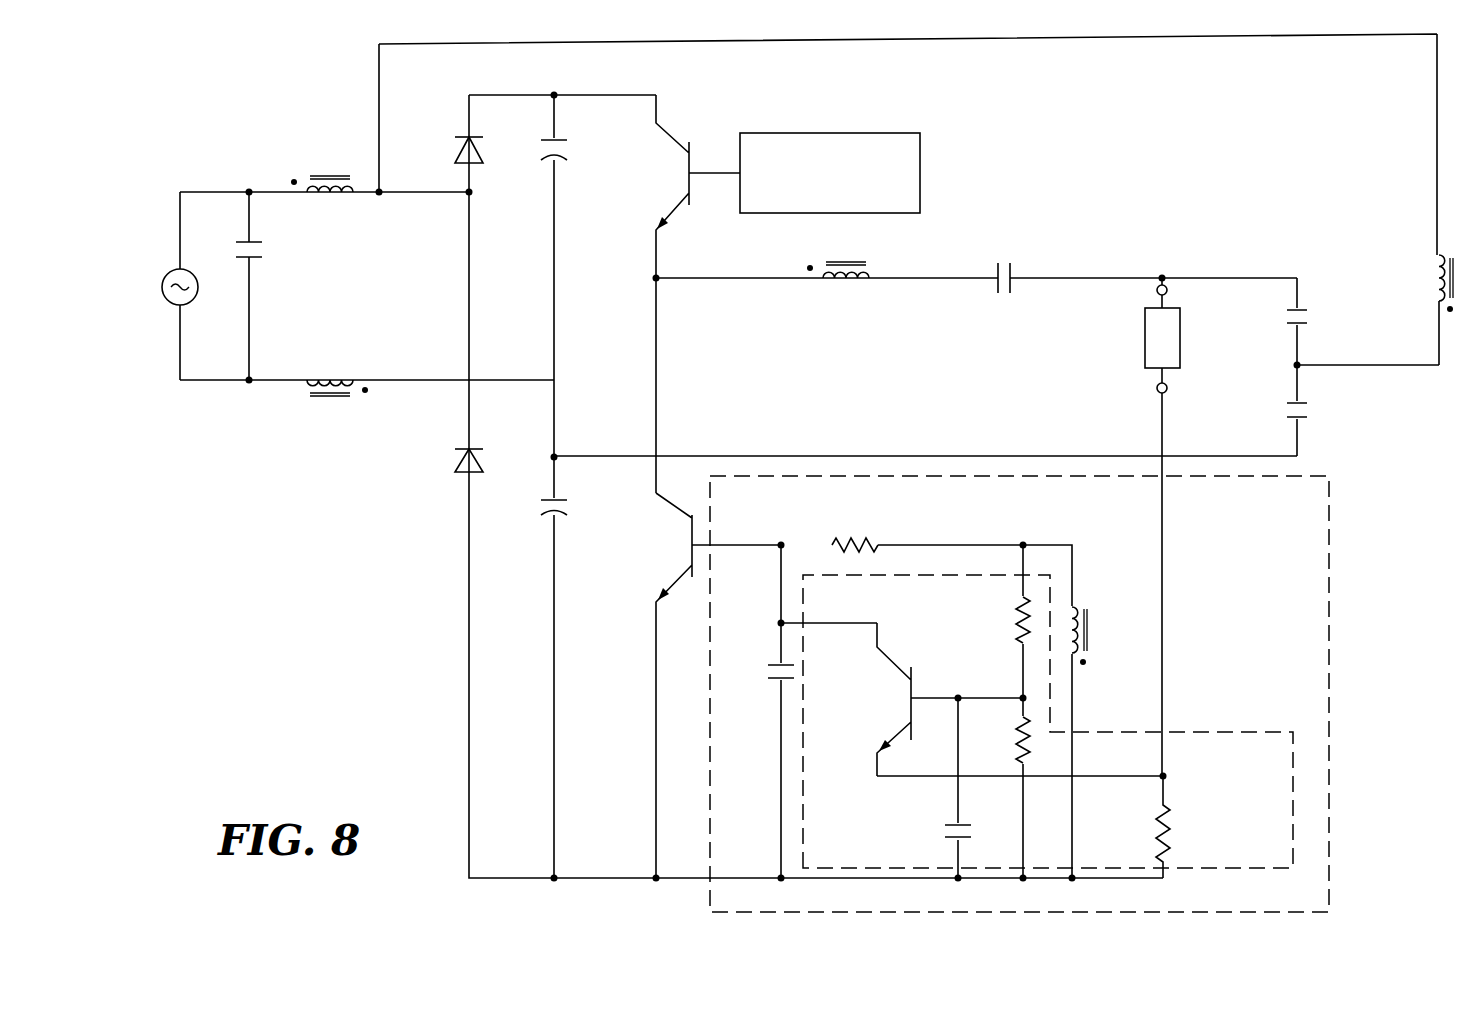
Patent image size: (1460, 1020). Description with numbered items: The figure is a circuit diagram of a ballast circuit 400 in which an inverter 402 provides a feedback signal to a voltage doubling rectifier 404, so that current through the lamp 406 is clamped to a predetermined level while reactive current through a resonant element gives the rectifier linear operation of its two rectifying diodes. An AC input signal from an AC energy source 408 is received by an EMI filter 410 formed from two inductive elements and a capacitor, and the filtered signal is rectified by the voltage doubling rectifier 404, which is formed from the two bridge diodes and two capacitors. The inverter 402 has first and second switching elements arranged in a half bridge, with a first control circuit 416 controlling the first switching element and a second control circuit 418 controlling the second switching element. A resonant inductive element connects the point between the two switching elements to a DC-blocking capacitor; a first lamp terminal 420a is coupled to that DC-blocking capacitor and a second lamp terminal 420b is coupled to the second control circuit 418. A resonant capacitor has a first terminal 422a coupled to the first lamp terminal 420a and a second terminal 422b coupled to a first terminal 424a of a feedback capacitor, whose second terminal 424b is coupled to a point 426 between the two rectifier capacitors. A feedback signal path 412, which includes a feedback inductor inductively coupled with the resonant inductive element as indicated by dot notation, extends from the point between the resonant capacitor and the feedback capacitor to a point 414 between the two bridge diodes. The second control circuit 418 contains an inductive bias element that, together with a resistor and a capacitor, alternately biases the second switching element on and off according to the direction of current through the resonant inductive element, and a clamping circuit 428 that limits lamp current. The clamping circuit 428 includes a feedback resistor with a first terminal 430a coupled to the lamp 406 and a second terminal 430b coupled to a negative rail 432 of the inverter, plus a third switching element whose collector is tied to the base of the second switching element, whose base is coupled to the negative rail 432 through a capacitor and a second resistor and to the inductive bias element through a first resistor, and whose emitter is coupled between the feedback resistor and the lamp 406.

The ballast circuit 400 is at (250, 128).
The inverter 402 is at (1072, 94).
The voltage doubling rectifier 404 is at (528, 131).
The lamp 406 is at (1143, 350).
The AC energy source 408 is at (185, 305).
The EMI filter 410 is at (345, 268).
The feedback signal path 412 is at (1437, 100).
The point between the first and second rectifying bridge diodes 414 is at (433, 193).
The first control circuit 416 is at (860, 133).
The second control circuit 418 is at (1329, 532).
The first lamp terminal 420a is at (1155, 290).
The second lamp terminal 420b is at (1155, 392).
The first terminal of the resonant capacitor 422a is at (1297, 285).
The second terminal of the resonant capacitor 422b is at (1300, 335).
The first terminal of the feedback capacitor 424a is at (1297, 385).
The second terminal of the feedback capacitor 424b is at (1300, 428).
The point between the first and second capacitors 426 is at (556, 378).
The clamping circuit 428 is at (1227, 732).
The first terminal of the feedback resistor 430a is at (1163, 776).
The second terminal of the feedback resistor 430b is at (1168, 858).
The negative rail 432 is at (1105, 880).